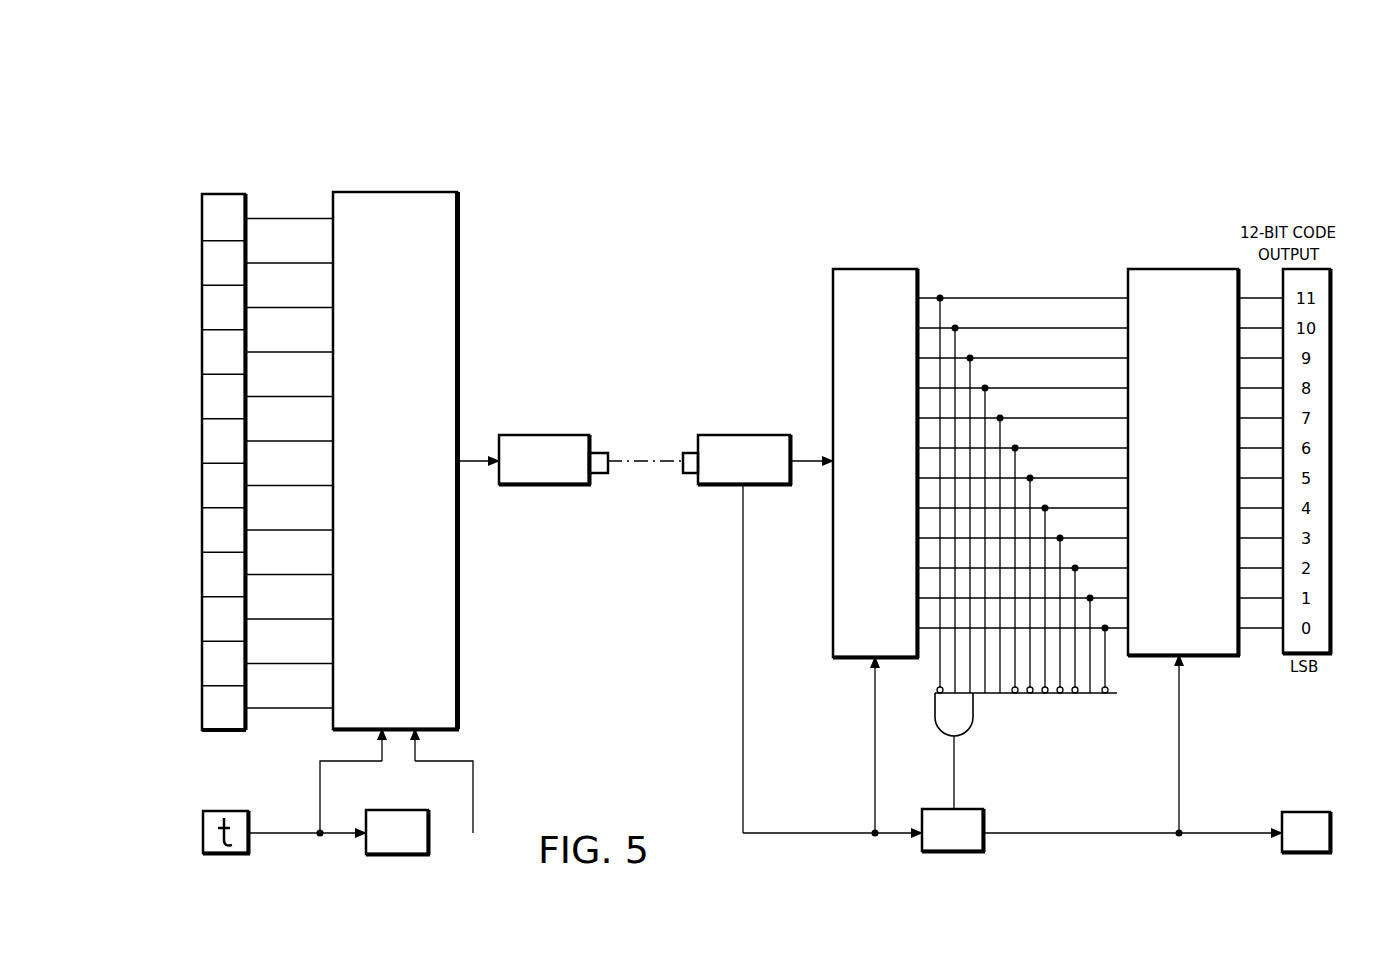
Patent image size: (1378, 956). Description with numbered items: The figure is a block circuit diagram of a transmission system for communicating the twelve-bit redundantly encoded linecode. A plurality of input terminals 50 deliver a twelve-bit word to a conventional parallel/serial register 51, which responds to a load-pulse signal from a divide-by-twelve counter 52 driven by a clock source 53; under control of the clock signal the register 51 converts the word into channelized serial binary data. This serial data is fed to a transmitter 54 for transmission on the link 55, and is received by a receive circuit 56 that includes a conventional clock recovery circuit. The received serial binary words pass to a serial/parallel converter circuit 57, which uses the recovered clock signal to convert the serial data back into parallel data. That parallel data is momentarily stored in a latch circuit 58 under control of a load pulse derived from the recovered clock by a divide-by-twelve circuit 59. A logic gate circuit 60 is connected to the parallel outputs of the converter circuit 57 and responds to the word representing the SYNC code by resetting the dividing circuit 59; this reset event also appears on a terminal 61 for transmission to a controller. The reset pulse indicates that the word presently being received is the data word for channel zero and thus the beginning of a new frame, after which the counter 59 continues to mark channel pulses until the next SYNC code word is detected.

The input terminals 50 is at (245, 497).
The parallel/serial register 51 is at (457, 312).
The divide-by-twelve counter 52 is at (430, 853).
The clock source 53 is at (239, 810).
The transmitter 54 is at (515, 484).
The link 55 is at (620, 462).
The receive circuit 56 is at (712, 484).
The serial/parallel converter circuit 57 is at (833, 618).
The latch circuit 58 is at (1155, 657).
The divide-by-twelve circuit 59 is at (985, 850).
The logic gate circuit 60 is at (973, 730).
The terminal 61 is at (1295, 812).